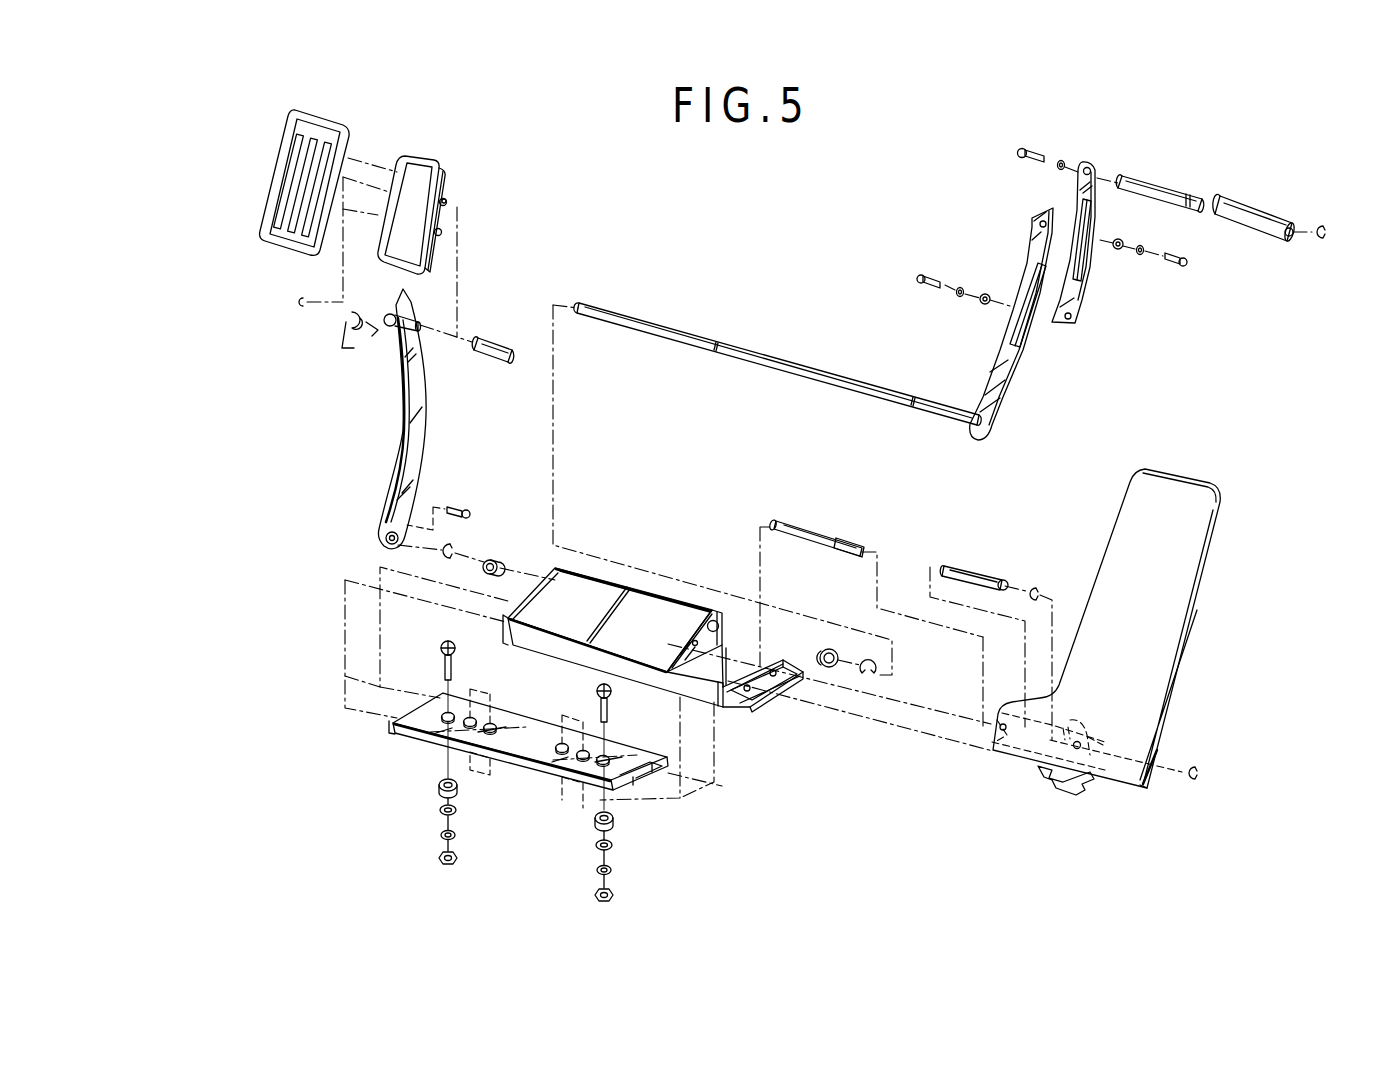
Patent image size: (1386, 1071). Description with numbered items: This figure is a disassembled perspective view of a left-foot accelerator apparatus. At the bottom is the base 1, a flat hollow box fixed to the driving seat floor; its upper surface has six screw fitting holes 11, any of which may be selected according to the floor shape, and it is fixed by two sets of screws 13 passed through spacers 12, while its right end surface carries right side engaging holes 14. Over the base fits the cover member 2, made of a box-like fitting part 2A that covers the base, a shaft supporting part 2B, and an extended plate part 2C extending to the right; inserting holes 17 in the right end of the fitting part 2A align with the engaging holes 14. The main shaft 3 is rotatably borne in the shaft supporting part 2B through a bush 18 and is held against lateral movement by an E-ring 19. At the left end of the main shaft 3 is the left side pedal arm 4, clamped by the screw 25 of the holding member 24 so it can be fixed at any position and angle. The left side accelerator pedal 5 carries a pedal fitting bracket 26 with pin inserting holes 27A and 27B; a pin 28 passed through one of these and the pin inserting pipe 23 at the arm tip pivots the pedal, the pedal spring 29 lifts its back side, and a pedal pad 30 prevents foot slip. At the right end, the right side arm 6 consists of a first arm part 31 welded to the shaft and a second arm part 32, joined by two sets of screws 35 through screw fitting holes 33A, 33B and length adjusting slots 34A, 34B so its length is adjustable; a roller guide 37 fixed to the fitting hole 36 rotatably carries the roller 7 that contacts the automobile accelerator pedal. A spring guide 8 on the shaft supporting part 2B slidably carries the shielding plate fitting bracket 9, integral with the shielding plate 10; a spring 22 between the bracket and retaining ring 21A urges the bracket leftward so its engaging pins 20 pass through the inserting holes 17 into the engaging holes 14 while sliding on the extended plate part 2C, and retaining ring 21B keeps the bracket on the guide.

The base 1 is at (510, 781).
The cover member 2 is at (683, 646).
The fitting part 2A is at (543, 655).
The shaft supporting part 2B is at (577, 570).
The extended plate part 2C is at (793, 730).
The main shaft 3 is at (673, 328).
The left side pedal arm 4 is at (404, 419).
The left side accelerator pedal 5 is at (472, 211).
The right side arm 6 is at (1044, 280).
The roller 7 is at (1255, 234).
The spring guide 8 is at (822, 540).
The shielding plate fitting bracket 9 is at (1053, 795).
The shielding plate 10 is at (1120, 662).
The screw fitting holes 11 is at (445, 721).
The spacers 12 is at (440, 776).
The screws 13 is at (443, 668).
The right side engaging holes 14 is at (624, 787).
The inserting holes 17 is at (775, 688).
The bush 18 is at (510, 548).
The E-ring 19 is at (440, 553).
The engaging pins 20 is at (1040, 770).
The retaining ring 21A is at (1033, 586).
The retaining ring 21B is at (1200, 775).
The spring 22 is at (981, 573).
The pin inserting pipe 23 is at (388, 328).
The holding member 24 is at (406, 500).
The screw 25 is at (472, 514).
The pedal fitting bracket 26 is at (446, 190).
The pin inserting hole 27A is at (449, 200).
The pin inserting hole 27B is at (445, 233).
The pin 28 is at (492, 362).
The pedal spring 29 is at (350, 325).
The pedal pad 30 is at (262, 215).
The first arm part 31 is at (1003, 398).
The second arm part 32 is at (1056, 250).
The screw fitting hole 33A is at (987, 317).
The screw fitting hole 33B is at (1078, 318).
The length adjusting slot 34A is at (1010, 343).
The length adjusting slot 34B is at (1078, 183).
The screws 35 is at (918, 279).
The fitting hole 36 is at (1093, 166).
The roller guide 37 is at (1178, 185).